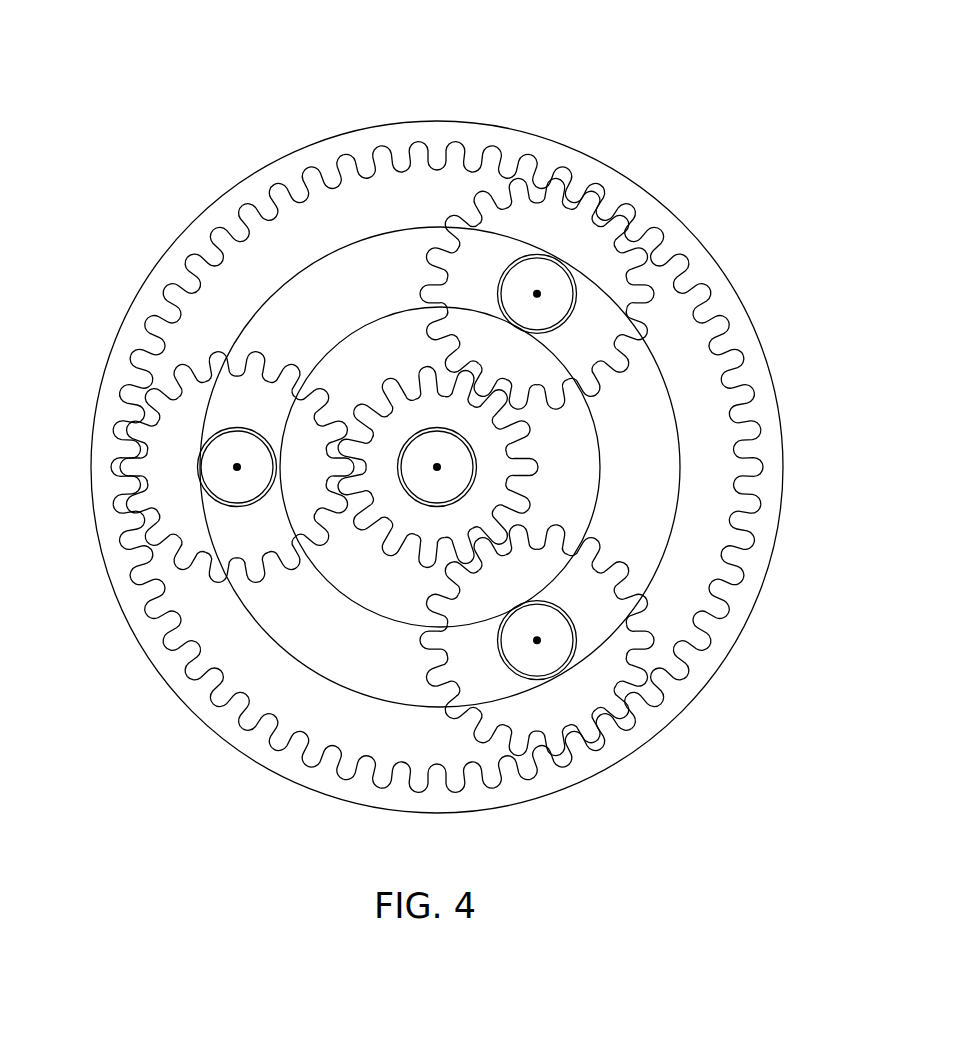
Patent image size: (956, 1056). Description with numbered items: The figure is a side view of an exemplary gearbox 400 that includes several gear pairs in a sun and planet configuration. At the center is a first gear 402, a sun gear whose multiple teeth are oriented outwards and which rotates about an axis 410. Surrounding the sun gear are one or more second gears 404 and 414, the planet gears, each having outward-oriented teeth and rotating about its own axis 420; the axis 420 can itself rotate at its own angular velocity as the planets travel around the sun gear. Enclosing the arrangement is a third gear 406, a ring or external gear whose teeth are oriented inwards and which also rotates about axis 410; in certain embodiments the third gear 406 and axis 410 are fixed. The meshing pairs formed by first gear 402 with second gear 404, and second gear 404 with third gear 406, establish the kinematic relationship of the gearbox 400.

The gearbox 400 is at (678, 76).
The first gear 402 is at (545, 449).
The second gear 404 is at (410, 266).
The third gear 406 is at (732, 258).
The axis 410 is at (436, 468).
The second gear 414 is at (150, 537).
The axis 420 is at (540, 291).